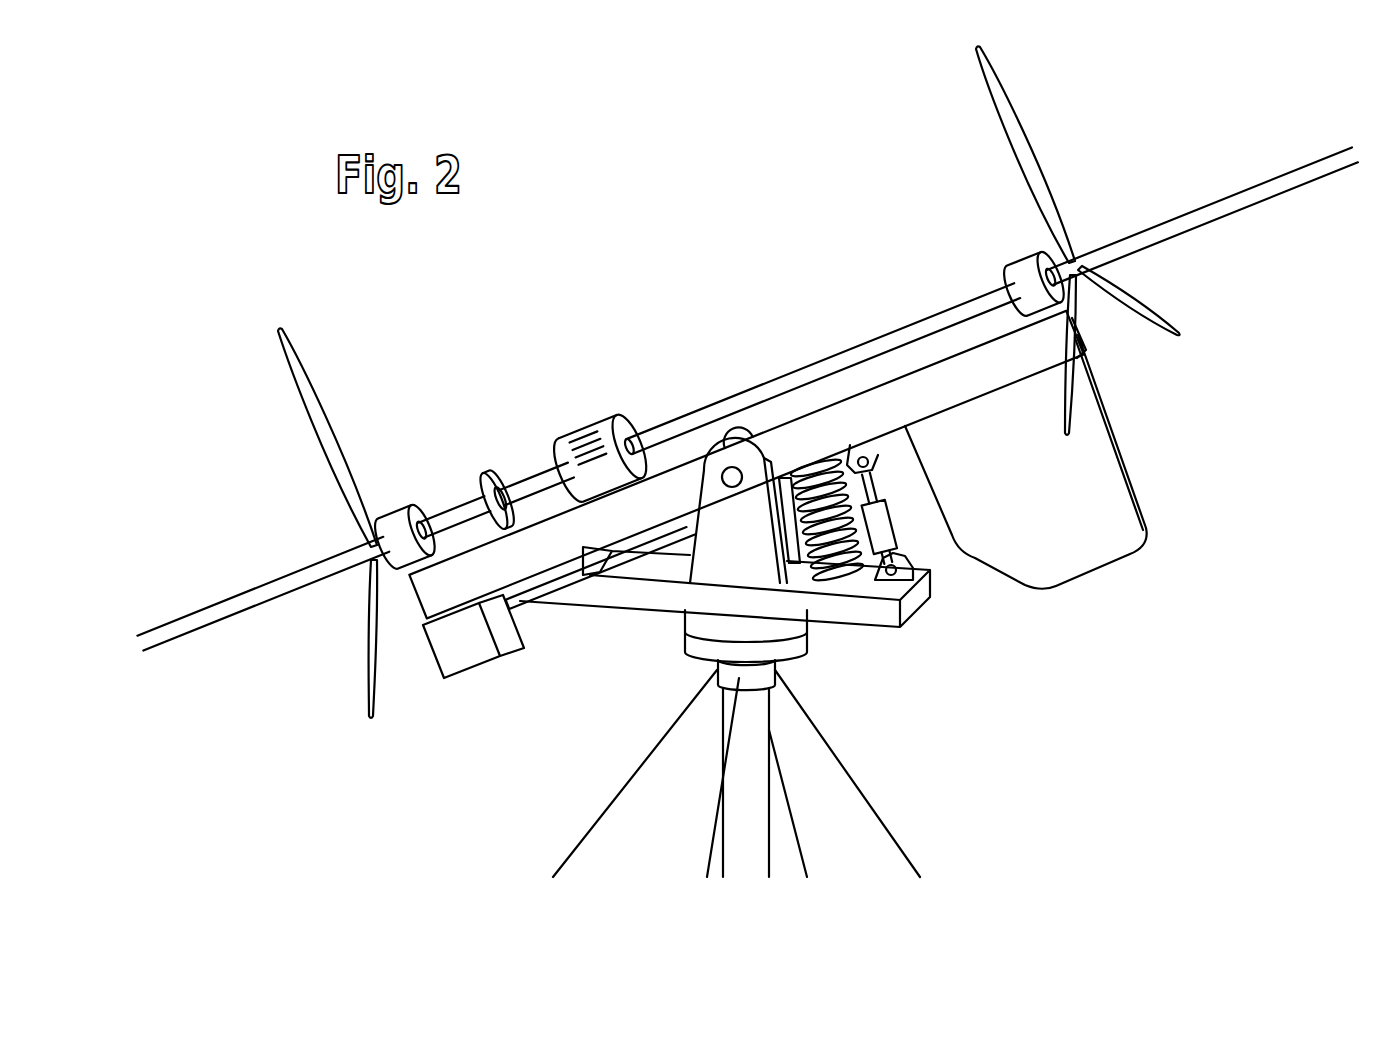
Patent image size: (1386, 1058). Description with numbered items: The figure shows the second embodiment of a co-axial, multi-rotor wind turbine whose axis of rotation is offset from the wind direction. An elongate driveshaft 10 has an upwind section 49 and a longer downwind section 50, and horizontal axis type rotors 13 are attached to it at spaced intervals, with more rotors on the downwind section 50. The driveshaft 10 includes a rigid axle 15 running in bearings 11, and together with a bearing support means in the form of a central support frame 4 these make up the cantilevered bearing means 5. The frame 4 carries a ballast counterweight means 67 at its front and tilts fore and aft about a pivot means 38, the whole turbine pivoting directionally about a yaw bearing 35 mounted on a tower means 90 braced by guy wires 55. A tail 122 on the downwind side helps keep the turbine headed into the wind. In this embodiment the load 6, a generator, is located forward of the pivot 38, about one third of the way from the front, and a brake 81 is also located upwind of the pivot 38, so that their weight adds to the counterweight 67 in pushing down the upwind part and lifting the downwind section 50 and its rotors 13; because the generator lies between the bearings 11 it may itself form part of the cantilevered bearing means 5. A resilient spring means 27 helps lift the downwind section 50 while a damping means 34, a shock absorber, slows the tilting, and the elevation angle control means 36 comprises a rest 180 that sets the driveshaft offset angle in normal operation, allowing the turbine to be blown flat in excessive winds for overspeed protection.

The bearing support means (central support frame) 4 is at (892, 383).
The cantilevered bearing means 5 is at (683, 240).
The load 6 is at (597, 420).
The elongate driveshaft 10 is at (1228, 262).
The bearing 11 is at (398, 513).
The horizontal axis type rotor 13 is at (1163, 318).
The axle 15 is at (543, 473).
The resilient spring means 27 is at (841, 576).
The damping means (shock absorber) 34 is at (906, 527).
The yaw bearing 35 is at (686, 652).
The elevation angle control means 36 is at (992, 640).
The pivot means 38 is at (722, 468).
The upwind section of the driveshaft 49 is at (230, 618).
The downwind section of the driveshaft 50 is at (1247, 210).
The guy wire 55 is at (818, 733).
The ballast counterweight means 67 is at (470, 673).
The brake 81 is at (487, 478).
The tower means 90 is at (722, 733).
The tail 122 is at (1148, 542).
The rest 180 is at (551, 590).